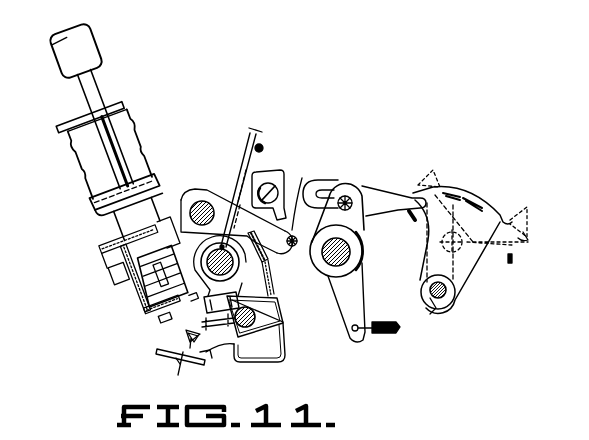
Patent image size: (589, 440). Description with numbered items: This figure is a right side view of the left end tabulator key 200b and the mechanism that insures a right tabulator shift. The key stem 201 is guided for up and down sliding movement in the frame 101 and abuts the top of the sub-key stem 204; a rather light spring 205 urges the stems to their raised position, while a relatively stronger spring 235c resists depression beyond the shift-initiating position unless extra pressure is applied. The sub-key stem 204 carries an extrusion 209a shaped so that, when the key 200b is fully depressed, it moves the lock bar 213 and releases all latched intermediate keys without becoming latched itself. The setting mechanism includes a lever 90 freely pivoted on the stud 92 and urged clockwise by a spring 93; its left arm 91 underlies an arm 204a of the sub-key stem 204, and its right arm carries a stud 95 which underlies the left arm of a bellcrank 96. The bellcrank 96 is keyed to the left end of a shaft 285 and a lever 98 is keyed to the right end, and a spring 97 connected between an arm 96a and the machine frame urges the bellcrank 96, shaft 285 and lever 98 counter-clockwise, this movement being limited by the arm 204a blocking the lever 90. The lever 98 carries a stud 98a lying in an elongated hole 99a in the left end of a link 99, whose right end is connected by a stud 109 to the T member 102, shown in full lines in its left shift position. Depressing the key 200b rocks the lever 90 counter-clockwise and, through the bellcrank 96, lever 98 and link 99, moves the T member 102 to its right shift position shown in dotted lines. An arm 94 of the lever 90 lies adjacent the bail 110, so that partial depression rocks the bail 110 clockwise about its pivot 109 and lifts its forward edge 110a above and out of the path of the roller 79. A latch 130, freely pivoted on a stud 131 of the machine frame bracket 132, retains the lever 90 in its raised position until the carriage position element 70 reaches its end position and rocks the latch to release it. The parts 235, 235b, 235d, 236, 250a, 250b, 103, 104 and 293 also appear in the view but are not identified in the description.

The left end tabulator key 200b is at (88, 48).
The frame 101 is at (60, 124).
The key stem 201 is at (130, 130).
The sub-key stem 204 is at (122, 222).
The arm of sub-key stem 204a is at (100, 248).
The left arm of lever 91 is at (117, 269).
The extrusion 209a is at (140, 288).
The spring 205 is at (153, 306).
The lock bar 213 is at (163, 321).
The spring 93 is at (174, 243).
The lever 90 is at (201, 186).
The stud 92 is at (205, 206).
The arm of lever 94 is at (266, 256).
The carriage position element 70 is at (200, 266).
The bail 110 is at (272, 280).
The forward edge of bail 110a is at (280, 312).
The frame 236 is at (284, 338).
The stud 109 is at (272, 303).
The roller 79 is at (208, 343).
The strut 235 is at (274, 358).
The strut end 235b is at (204, 358).
The spring 235c is at (182, 353).
The strut head 235d is at (172, 349).
The latch 130 is at (258, 140).
The stud 131 is at (247, 158).
The machine frame bracket 132 is at (277, 170).
The bellcrank 96 is at (303, 180).
The stud 95 is at (292, 232).
The elongated hole 99a is at (330, 182).
The link 99 is at (368, 188).
The stud 98a is at (351, 210).
The lever 98 is at (352, 254).
The shaft 285 is at (358, 274).
The arm 96a is at (350, 314).
The spring 97 is at (386, 334).
The pin 250b is at (411, 209).
The bracket 103 is at (434, 180).
The T member 102 is at (467, 198).
The tab 104 is at (528, 214).
The pin 250a is at (513, 260).
The pivot 293 is at (437, 309).